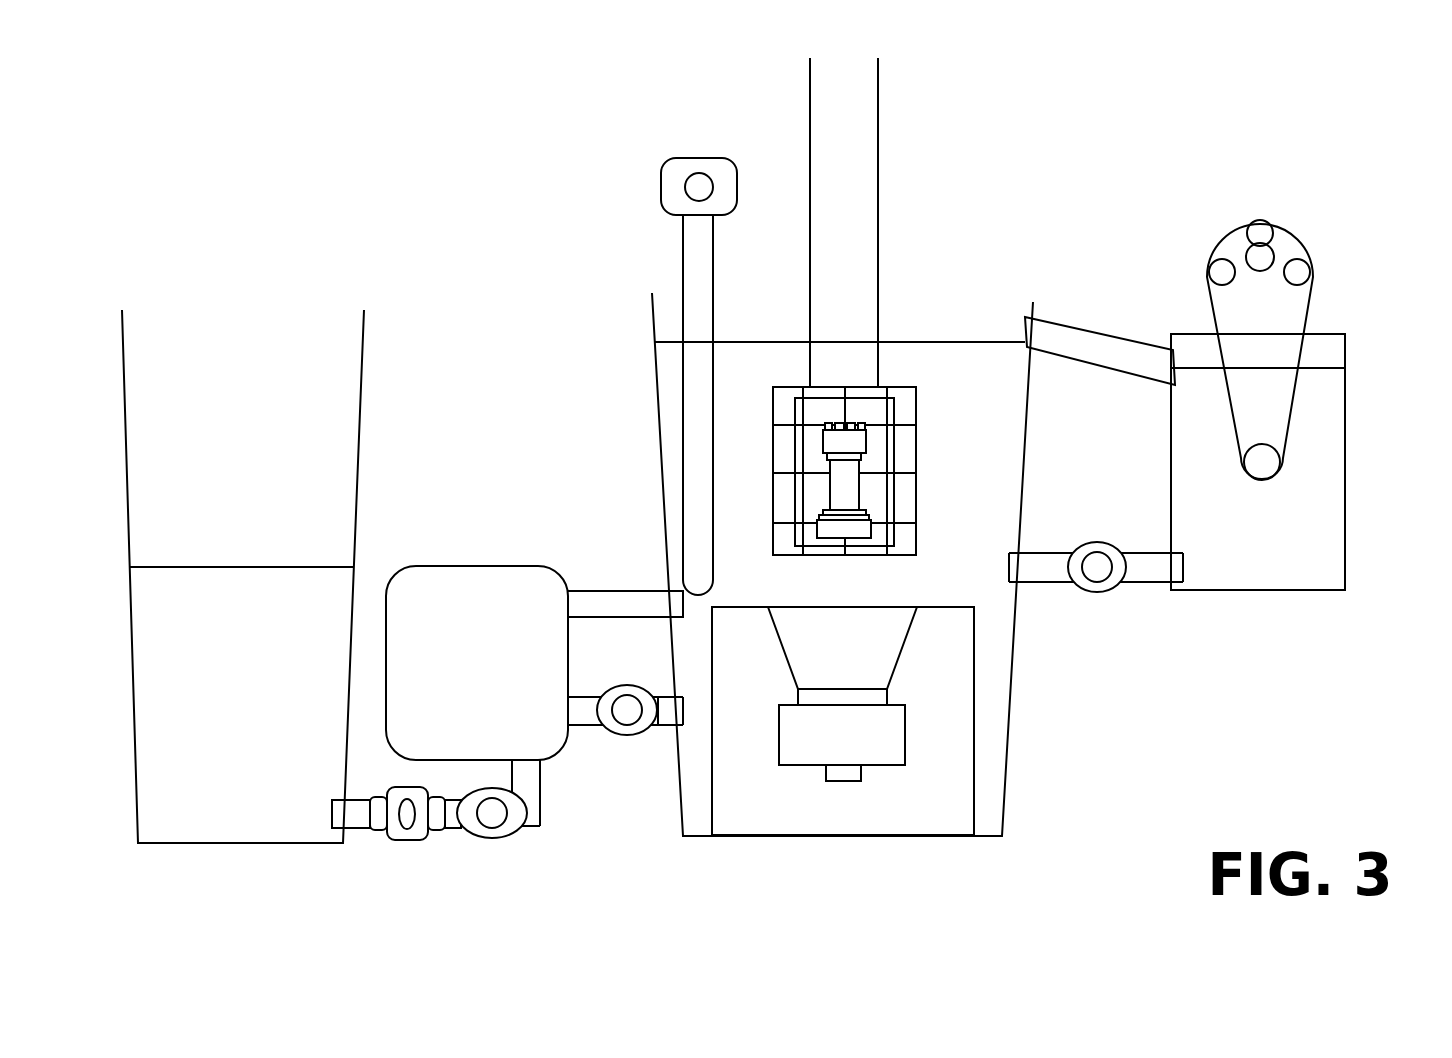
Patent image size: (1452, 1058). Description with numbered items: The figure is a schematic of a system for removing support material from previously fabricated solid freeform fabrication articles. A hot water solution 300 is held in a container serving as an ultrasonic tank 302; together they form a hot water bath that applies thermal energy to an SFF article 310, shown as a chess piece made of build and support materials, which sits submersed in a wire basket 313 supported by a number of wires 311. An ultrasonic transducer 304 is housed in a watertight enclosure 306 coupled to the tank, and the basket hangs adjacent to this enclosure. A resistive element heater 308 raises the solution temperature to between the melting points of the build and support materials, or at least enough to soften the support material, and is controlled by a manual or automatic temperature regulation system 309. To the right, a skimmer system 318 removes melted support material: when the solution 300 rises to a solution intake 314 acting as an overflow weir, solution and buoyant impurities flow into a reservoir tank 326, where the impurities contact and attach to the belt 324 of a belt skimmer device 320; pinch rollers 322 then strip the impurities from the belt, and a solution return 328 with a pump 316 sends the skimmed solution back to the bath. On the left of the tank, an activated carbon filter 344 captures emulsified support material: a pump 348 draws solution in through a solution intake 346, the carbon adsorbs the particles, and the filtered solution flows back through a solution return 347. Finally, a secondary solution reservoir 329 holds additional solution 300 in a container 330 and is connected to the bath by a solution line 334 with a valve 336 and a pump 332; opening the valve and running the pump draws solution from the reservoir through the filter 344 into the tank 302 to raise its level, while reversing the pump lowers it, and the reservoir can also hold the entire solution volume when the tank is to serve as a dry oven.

The solution 300 is at (240, 410).
The ultrasonic tank 302 is at (1050, 460).
The ultrasonic transducer 304 is at (906, 750).
The watertight enclosure 306 is at (998, 692).
The resistive element heater 308 is at (697, 327).
The temperature regulation system 309 is at (700, 186).
The SFF article 310 is at (846, 360).
The wires 311 is at (836, 90).
The wire basket 313 is at (916, 470).
The solution intake 314 is at (1078, 325).
The pump 316 is at (1095, 593).
The skimmer system 318 is at (1259, 628).
The belt skimmer device 320 is at (1287, 346).
The pinch rollers 322 is at (1263, 232).
The belt 324 is at (1212, 329).
The reservoir tank 326 is at (1346, 462).
The solution return 328 is at (1037, 585).
The secondary solution reservoir 329 is at (170, 864).
The container 330 is at (272, 845).
The pump 332 is at (501, 839).
The solution line 334 is at (360, 816).
The valve 336 is at (408, 812).
The activated carbon filter 344 is at (441, 566).
The solution intake 346 is at (666, 732).
The solution return 347 is at (620, 590).
The pump 348 is at (627, 712).